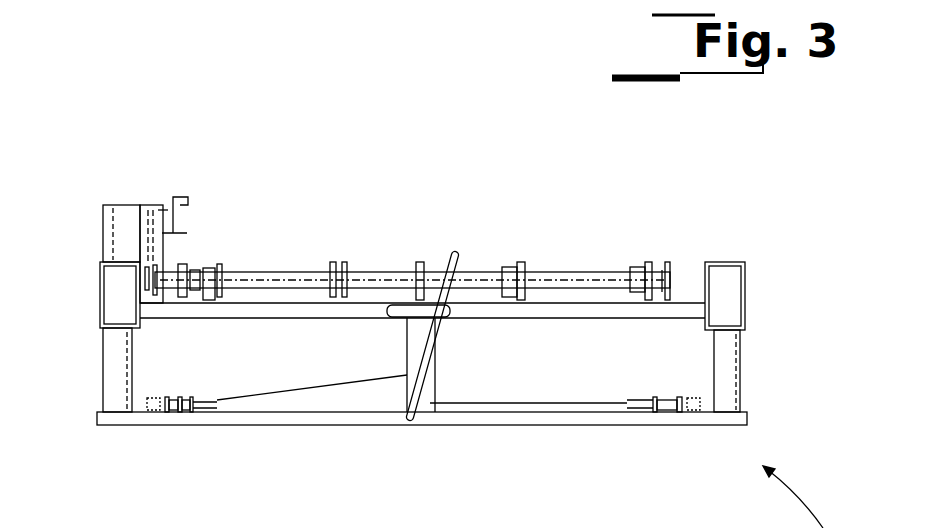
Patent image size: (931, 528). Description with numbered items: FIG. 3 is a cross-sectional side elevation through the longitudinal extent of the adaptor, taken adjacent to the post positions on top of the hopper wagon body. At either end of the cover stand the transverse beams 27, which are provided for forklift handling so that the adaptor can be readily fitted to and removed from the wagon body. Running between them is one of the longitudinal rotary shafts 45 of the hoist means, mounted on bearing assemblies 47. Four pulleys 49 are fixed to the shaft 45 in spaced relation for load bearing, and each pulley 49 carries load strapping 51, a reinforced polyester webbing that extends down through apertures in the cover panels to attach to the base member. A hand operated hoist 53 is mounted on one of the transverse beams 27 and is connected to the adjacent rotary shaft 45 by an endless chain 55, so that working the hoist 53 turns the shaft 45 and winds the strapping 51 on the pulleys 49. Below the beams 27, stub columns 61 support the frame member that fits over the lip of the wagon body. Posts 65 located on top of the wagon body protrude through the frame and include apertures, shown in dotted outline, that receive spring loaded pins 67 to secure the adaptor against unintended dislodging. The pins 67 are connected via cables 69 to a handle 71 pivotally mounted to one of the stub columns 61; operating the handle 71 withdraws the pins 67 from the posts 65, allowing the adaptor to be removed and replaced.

The transverse beams 27 is at (97, 297).
The longitudinal rotary shafts 45 is at (595, 272).
The bearing assemblies 47 is at (420, 262).
The pulleys 49 is at (648, 267).
The load strapping 51 is at (333, 328).
The hand operated hoist 53 is at (163, 202).
The endless chain 55 is at (157, 252).
The stub columns 61 is at (103, 373).
The posts 65 is at (153, 398).
The spring loaded pins 67 is at (172, 412).
The cables 69 is at (322, 398).
The handle 71 is at (460, 262).